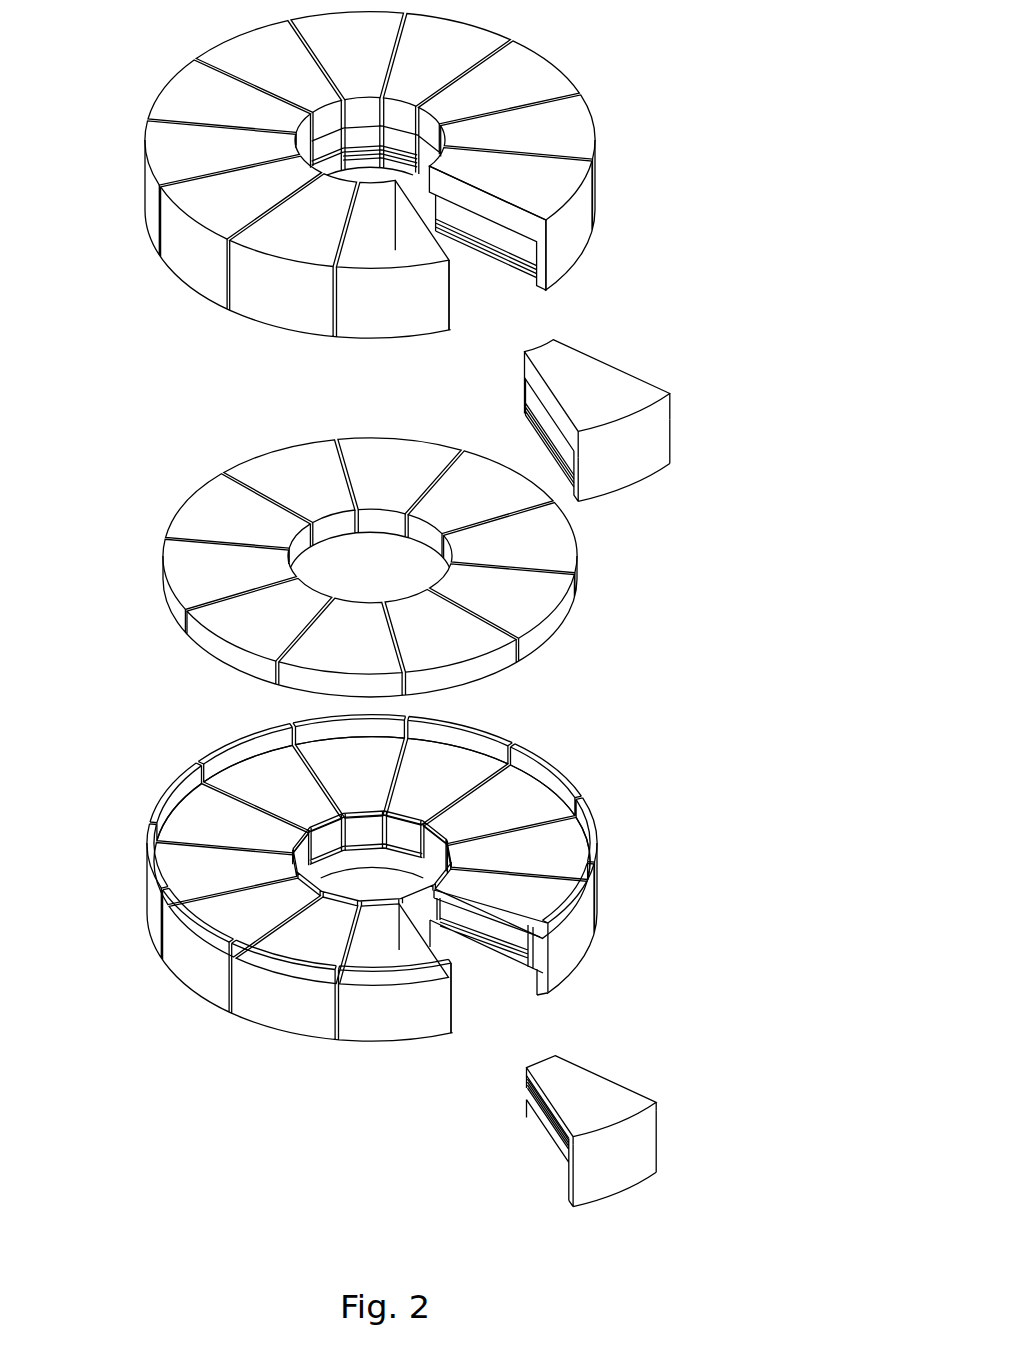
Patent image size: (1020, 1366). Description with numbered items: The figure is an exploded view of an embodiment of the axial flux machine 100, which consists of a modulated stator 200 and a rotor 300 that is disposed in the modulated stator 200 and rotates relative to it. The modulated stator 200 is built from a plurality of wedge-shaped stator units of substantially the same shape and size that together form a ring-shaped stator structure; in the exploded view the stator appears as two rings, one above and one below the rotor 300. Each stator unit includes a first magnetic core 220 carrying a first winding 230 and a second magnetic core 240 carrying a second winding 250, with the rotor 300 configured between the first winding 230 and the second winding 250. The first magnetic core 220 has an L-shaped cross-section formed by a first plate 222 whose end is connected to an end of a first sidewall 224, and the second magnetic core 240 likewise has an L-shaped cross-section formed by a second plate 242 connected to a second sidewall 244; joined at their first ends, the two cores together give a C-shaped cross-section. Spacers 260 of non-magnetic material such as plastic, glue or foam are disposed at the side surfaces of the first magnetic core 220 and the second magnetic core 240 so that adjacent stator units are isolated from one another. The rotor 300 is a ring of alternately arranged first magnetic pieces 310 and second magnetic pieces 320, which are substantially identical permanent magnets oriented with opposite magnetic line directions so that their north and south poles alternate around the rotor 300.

The axial flux machine 100 is at (102, 28).
The modulated stator 200 is at (165, 297).
The first magnetic core 220 is at (760, 350).
The first plate 222 is at (622, 380).
The first sidewall 224 is at (647, 418).
The first winding 230 is at (522, 388).
The second magnetic core 240 is at (625, 1236).
The second plate 242 is at (557, 1166).
The second sidewall 244 is at (600, 1170).
The second winding 250 is at (598, 1090).
The spacers 260 is at (540, 234).
The rotor 300 is at (405, 398).
The first magnetic pieces 310 is at (318, 455).
The second magnetic pieces 320 is at (387, 457).